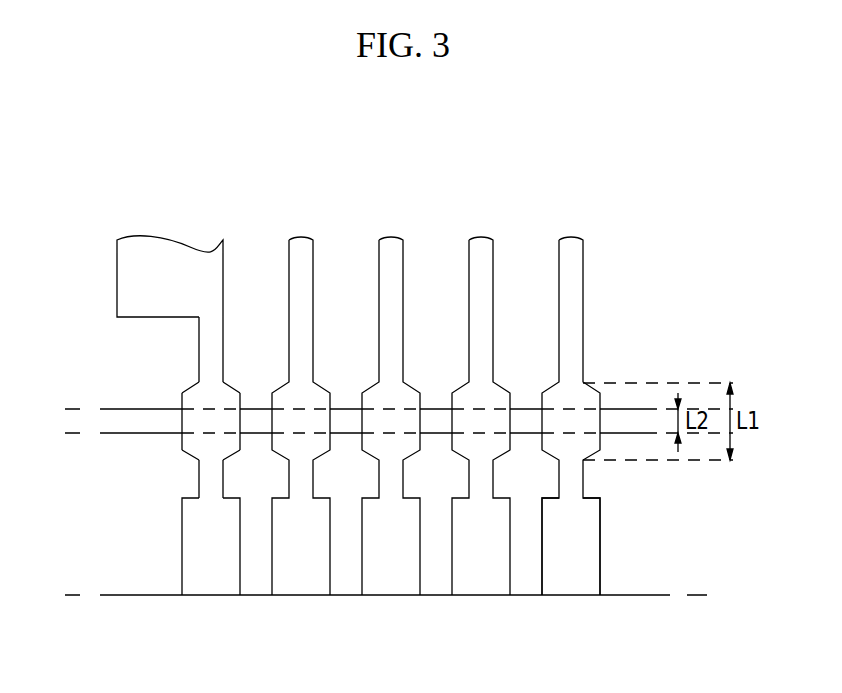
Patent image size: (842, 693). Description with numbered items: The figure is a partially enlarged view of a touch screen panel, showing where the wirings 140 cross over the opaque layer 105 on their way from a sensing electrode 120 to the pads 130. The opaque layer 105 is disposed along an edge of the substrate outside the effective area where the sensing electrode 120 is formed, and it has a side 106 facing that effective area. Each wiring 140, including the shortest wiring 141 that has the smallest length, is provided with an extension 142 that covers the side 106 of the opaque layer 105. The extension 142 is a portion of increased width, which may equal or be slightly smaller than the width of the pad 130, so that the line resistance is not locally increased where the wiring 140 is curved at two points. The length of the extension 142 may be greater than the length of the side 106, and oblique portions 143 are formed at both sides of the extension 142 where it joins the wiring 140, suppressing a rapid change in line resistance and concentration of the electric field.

The opaque layer 105 is at (628, 583).
The side 106 is at (614, 413).
The sensing electrode 120 is at (127, 272).
The pad 130 is at (215, 583).
The wiring 140 is at (568, 266).
The shortest wiring 141 is at (205, 338).
The extension 142 is at (188, 420).
The oblique portion 143 is at (237, 388).